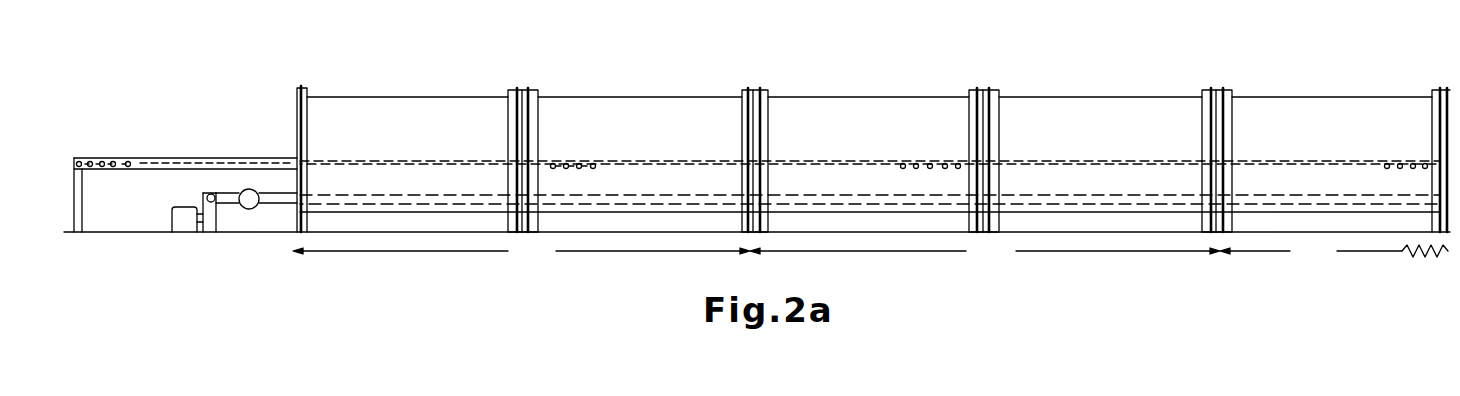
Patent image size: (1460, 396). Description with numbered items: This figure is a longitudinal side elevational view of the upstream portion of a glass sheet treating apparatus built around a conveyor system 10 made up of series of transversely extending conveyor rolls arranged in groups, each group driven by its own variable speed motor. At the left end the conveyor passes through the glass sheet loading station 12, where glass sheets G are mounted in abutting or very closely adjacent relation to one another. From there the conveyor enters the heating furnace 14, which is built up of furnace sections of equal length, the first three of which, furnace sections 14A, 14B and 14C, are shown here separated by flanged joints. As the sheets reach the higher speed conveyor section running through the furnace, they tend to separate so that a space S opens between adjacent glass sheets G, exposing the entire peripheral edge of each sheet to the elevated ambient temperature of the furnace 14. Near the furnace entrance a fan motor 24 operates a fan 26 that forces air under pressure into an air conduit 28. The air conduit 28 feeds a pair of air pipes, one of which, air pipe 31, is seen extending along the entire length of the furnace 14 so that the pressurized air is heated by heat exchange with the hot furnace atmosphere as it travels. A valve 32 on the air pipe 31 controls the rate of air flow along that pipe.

The conveyor system 10 is at (77, 150).
The glass sheet loading station 12 is at (157, 143).
The heating furnace 14 is at (449, 93).
The fan motor 24 is at (172, 213).
The fan 26 is at (216, 222).
The air conduit 28 is at (207, 196).
The air pipe 31 is at (260, 205).
The valve 32 is at (249, 209).
The space S is at (410, 160).
The glass sheets G is at (208, 160).
The furnace section 14A is at (521, 251).
The furnace section 14B is at (985, 251).
The furnace section 14C is at (1334, 251).